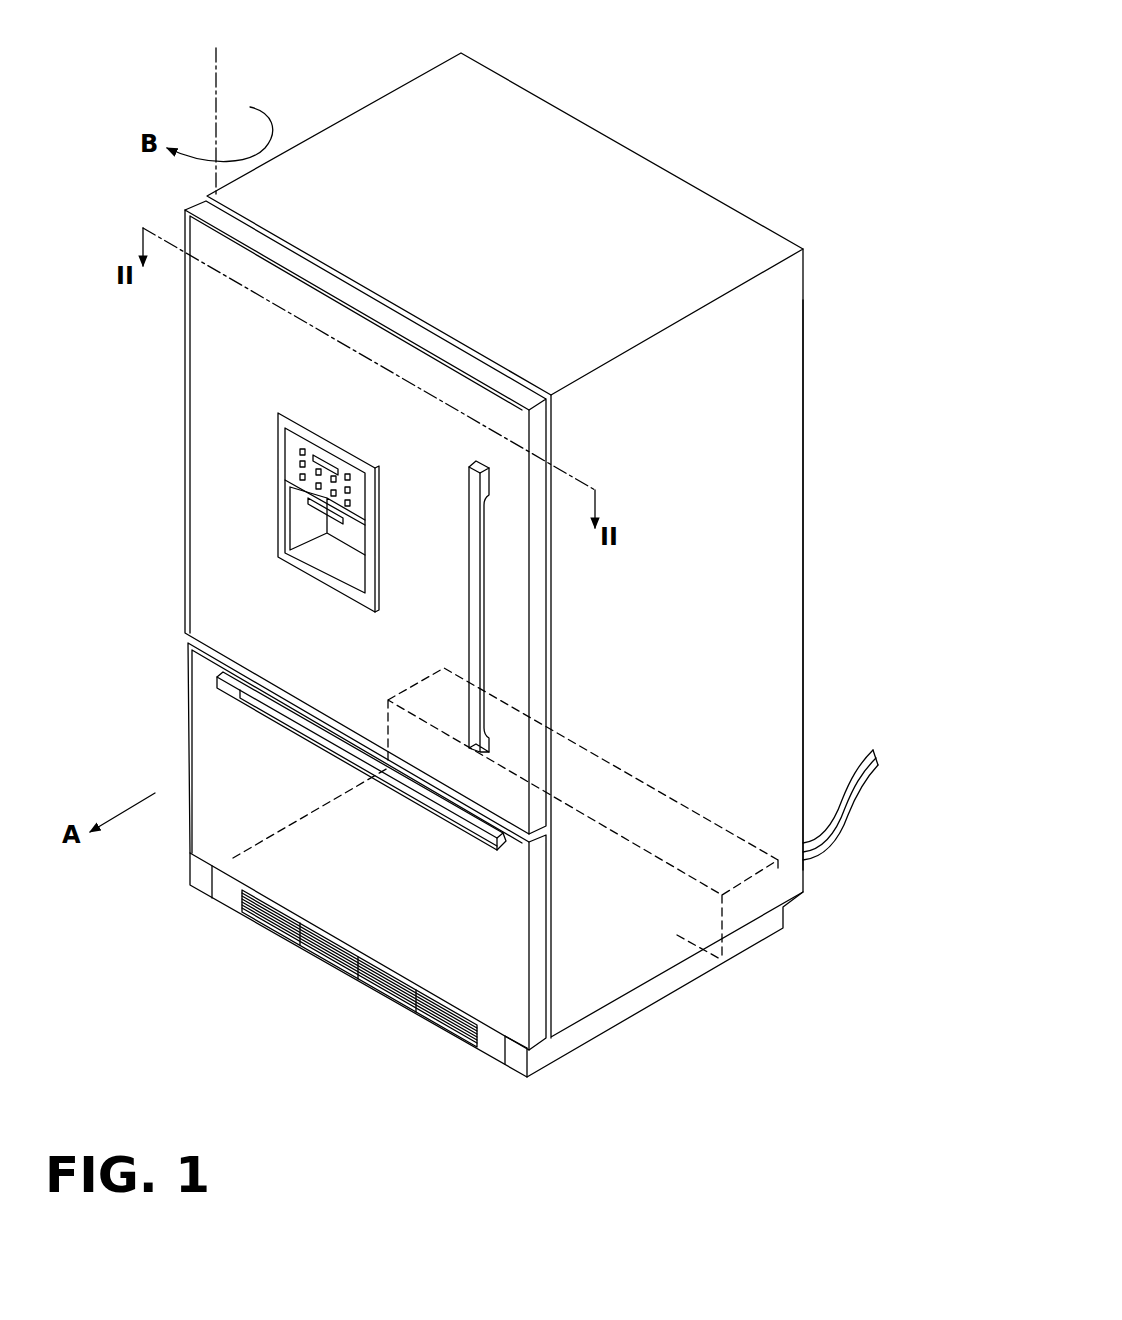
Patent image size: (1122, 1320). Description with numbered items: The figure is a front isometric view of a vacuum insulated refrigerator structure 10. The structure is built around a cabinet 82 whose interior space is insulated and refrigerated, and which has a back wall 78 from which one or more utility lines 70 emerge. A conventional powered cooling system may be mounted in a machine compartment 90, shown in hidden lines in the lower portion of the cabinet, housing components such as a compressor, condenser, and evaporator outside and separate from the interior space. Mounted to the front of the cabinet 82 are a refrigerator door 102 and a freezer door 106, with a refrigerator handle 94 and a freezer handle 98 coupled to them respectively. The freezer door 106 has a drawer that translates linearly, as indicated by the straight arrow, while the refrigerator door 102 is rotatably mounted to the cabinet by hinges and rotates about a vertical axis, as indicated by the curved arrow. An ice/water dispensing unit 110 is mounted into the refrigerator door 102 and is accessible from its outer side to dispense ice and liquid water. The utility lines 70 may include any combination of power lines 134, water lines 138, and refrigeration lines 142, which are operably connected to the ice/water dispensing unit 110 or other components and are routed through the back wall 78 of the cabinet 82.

The vacuum insulated refrigerator structure 10 is at (507, 565).
The utility lines 70 is at (886, 802).
The back wall 78 is at (803, 516).
The cabinet 82 is at (803, 628).
The machine compartment 90 is at (677, 937).
The refrigerator handle 94 is at (470, 648).
The freezer handle 98 is at (397, 790).
The refrigerator door 102 is at (183, 548).
The freezer door 106 is at (185, 713).
The ice/water dispensing unit 110 is at (276, 537).
The power lines 134 is at (872, 752).
The water lines 138 is at (877, 760).
The refrigeration lines 142 is at (879, 768).